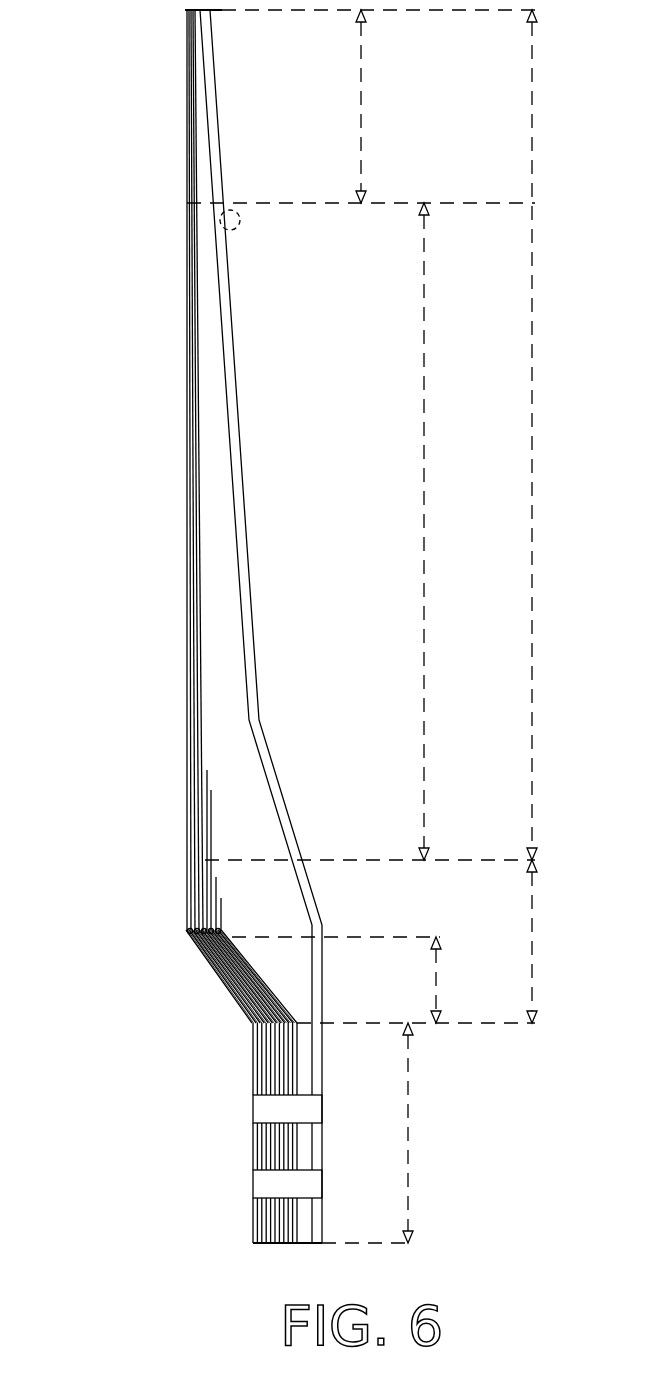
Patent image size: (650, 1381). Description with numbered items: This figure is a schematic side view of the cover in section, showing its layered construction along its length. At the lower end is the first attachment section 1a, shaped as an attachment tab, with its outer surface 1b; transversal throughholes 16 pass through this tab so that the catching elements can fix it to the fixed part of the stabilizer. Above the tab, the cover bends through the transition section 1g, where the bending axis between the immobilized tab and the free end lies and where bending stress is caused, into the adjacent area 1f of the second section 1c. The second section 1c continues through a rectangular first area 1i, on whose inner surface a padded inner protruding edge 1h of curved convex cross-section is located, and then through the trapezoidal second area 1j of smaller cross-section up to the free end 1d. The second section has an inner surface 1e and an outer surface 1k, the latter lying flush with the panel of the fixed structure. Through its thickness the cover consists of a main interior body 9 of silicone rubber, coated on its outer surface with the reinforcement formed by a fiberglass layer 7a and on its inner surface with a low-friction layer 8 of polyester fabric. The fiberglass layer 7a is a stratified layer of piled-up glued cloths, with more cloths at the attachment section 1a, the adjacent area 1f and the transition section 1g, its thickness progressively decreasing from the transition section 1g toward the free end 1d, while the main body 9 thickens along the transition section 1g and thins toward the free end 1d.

The free end of the second section 1d is at (185, 10).
The second area of the second section 1j is at (375, 106).
The inner protruding edge 1h is at (241, 226).
The inner surface of the second section 1e is at (243, 448).
The second section 1c is at (551, 435).
The first area of the second section 1i is at (439, 531).
The outer surface of the second section 1k is at (187, 582).
The main interior body of elastic material 9 is at (228, 730).
The low-friction layer 8 is at (280, 815).
The fiberglass layer 7a is at (225, 974).
The adjacent area of the second section to the first section 1f is at (548, 941).
The transition section 1g is at (458, 980).
The outer surface of the first section 1b is at (251, 1068).
The first attachment section 1a is at (426, 1133).
The throughhole in the attachment section 16 is at (265, 1112).